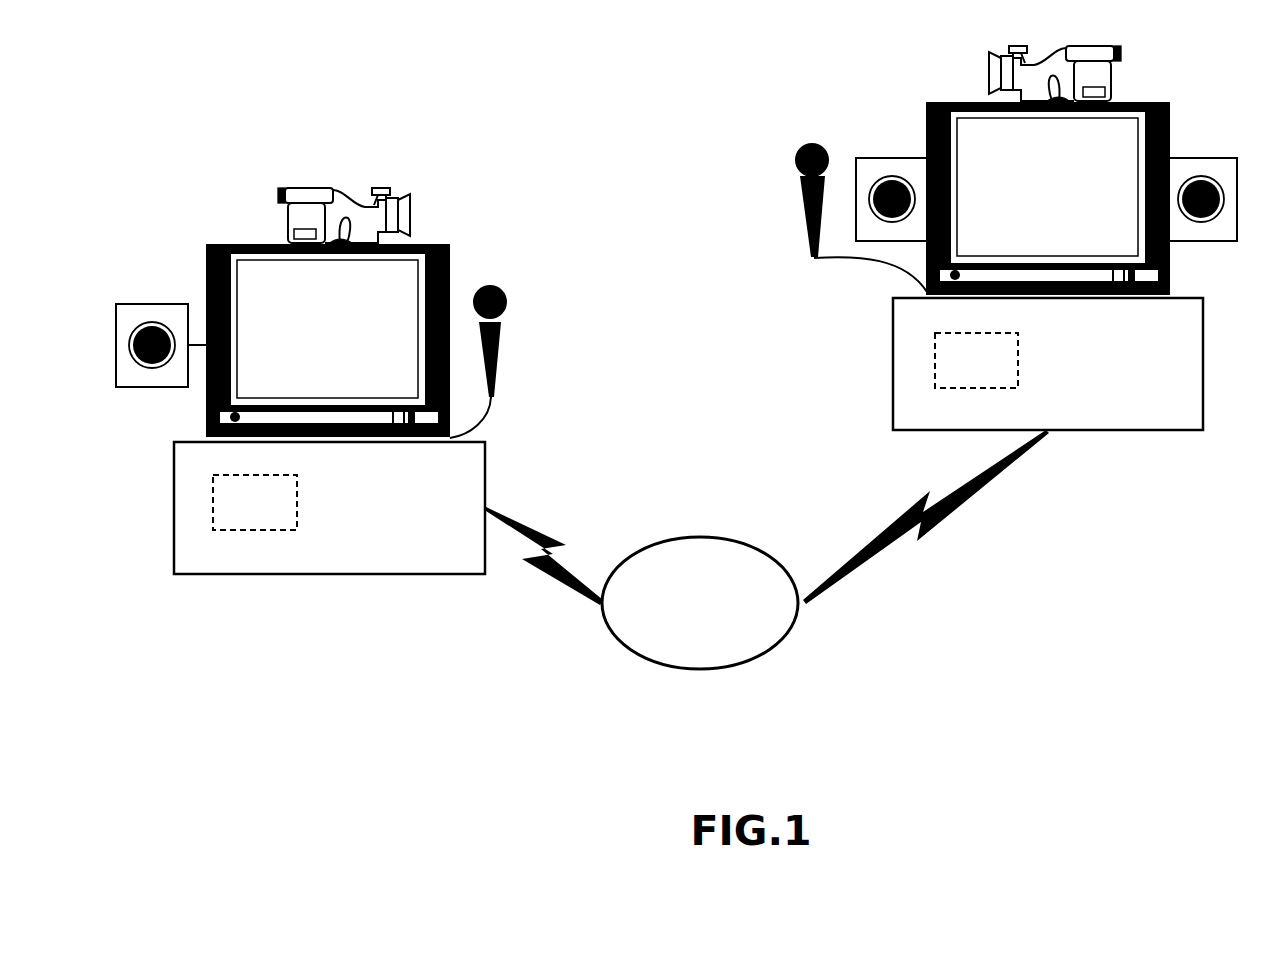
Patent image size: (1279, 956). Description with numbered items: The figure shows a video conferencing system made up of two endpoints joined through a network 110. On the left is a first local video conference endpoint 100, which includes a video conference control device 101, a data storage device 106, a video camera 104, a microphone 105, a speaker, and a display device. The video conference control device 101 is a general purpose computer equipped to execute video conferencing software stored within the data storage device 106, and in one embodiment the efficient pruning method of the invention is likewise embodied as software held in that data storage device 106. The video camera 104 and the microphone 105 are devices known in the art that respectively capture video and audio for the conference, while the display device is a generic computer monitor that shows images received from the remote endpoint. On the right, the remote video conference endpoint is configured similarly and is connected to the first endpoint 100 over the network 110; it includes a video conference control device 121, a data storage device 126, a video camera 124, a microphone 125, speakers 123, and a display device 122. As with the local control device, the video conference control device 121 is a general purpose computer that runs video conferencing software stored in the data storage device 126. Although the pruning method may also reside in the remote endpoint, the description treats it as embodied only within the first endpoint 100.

The first local video conference endpoint 100 is at (363, 706).
The video conference control device 101 is at (408, 575).
The video camera 104 is at (295, 188).
The microphone 105 is at (133, 302).
The data storage device 106 is at (253, 531).
The network 110 is at (680, 634).
The video conference control device 121 is at (1115, 434).
The display device 122 is at (943, 102).
The speakers 123 is at (893, 157).
The video camera 124 is at (1083, 57).
The microphone 125 is at (797, 192).
The data storage device 126 is at (935, 362).